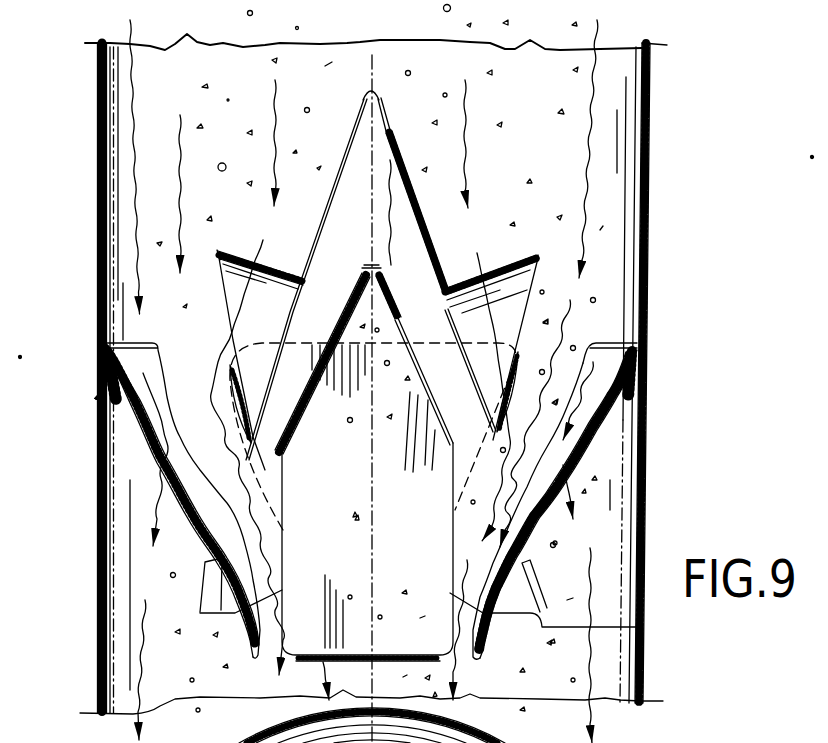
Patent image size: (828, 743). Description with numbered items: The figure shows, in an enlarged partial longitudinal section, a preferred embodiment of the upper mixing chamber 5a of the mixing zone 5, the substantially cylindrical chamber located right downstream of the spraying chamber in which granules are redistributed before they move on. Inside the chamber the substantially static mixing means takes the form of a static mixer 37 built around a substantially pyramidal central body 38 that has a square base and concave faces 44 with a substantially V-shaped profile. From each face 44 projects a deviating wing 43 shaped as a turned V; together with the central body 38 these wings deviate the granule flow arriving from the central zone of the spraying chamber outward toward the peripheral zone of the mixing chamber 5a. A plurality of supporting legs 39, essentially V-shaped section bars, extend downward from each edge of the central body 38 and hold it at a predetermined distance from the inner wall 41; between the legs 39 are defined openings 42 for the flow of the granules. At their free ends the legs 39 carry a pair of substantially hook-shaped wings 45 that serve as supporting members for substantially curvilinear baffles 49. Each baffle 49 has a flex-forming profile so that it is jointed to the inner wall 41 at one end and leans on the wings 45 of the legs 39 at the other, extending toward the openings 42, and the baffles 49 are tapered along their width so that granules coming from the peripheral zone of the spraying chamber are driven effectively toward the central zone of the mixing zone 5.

The mixing zone 5 is at (652, 228).
The upper mixing chamber 5a is at (648, 477).
The static mixer 37 is at (510, 156).
The central body 38 is at (359, 86).
The supporting legs 39 is at (203, 582).
The inner wall 41 is at (110, 220).
The openings 42 is at (221, 599).
The deviating wings 43 is at (232, 282).
The concave faces 44 is at (323, 218).
The hook-shaped wings 45 is at (296, 580).
The baffles 49 is at (190, 444).